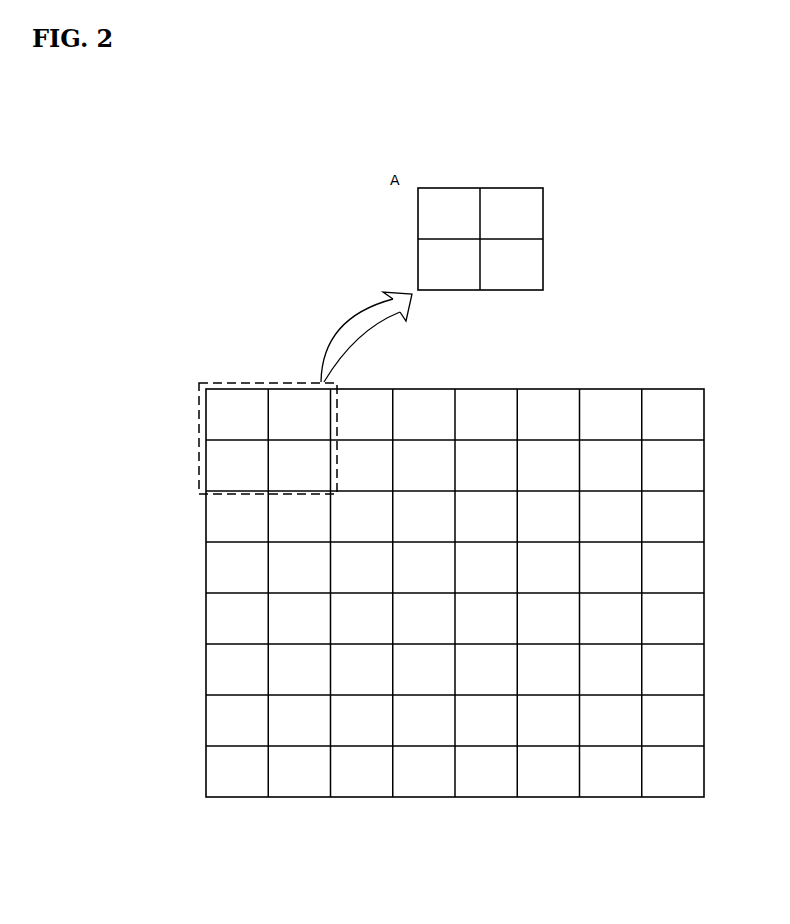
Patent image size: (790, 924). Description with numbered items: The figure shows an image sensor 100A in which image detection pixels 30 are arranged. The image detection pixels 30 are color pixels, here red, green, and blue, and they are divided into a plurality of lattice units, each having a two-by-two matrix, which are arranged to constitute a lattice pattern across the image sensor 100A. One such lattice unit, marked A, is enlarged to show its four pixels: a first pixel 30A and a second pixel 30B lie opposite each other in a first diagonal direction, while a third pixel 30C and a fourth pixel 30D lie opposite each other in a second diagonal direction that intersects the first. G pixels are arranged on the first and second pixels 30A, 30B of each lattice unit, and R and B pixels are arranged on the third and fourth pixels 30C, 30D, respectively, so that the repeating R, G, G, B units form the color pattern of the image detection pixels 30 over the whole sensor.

The image sensor 100A is at (241, 348).
The image detection pixels 30 is at (297, 466).
The first pixel 30A is at (510, 187).
The second pixel 30B is at (448, 291).
The third pixel 30C is at (447, 187).
The fourth pixel 30D is at (512, 291).